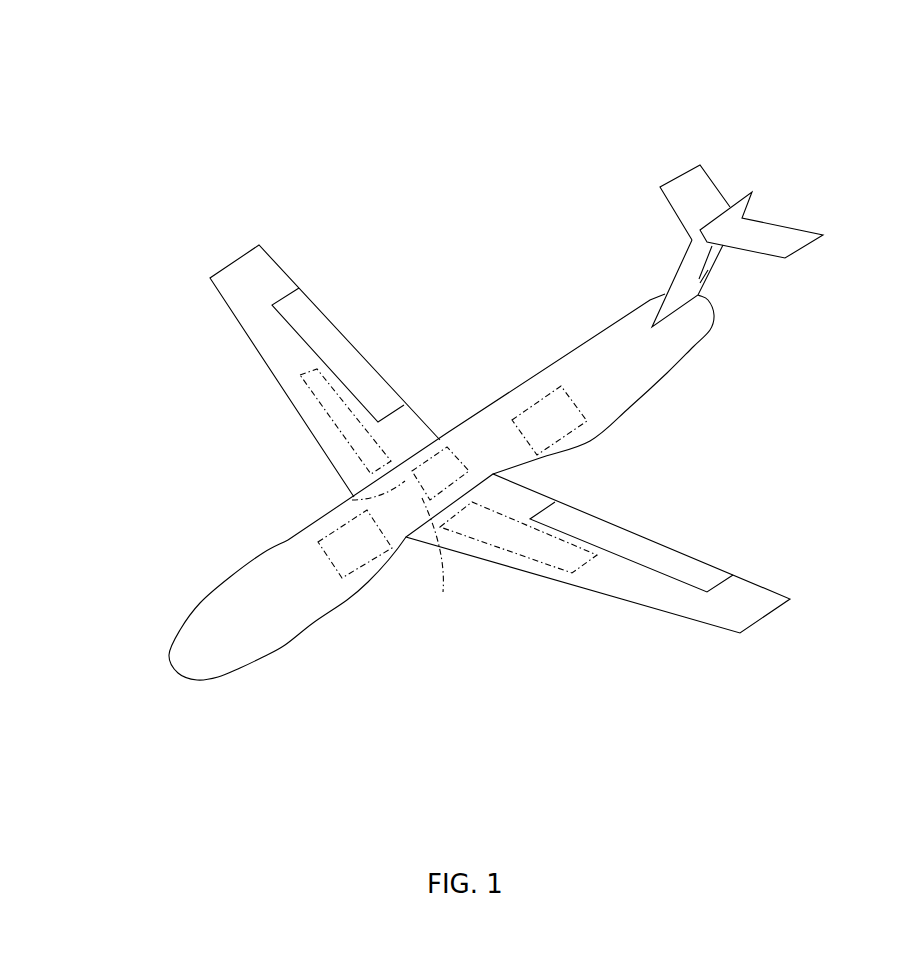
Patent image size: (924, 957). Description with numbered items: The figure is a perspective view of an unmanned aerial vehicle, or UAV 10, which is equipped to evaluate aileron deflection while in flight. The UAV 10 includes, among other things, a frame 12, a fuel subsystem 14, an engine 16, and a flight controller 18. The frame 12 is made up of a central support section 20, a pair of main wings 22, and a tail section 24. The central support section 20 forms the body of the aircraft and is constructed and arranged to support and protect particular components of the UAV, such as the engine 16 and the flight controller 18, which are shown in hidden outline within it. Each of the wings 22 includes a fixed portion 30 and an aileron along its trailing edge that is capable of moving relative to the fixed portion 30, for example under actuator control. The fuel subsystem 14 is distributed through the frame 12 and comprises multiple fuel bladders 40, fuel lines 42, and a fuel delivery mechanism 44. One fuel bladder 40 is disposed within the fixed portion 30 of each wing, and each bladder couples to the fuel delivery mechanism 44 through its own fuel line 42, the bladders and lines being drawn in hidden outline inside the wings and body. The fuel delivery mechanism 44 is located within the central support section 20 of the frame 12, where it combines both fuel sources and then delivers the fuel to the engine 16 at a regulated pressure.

The unmanned aerial vehicle 10 is at (105, 75).
The frame 12 is at (827, 438).
The fuel subsystem 14 is at (445, 342).
The engine 16 is at (318, 542).
The flight controller 18 is at (542, 402).
The central support section 20 is at (587, 442).
The main wings 22 is at (685, 487).
The tail section 24 is at (802, 280).
The fixed portions 30 is at (117, 315).
The fuel bladders 40 is at (542, 655).
The fuel lines 42 is at (443, 637).
The fuel delivery mechanism 44 is at (445, 446).